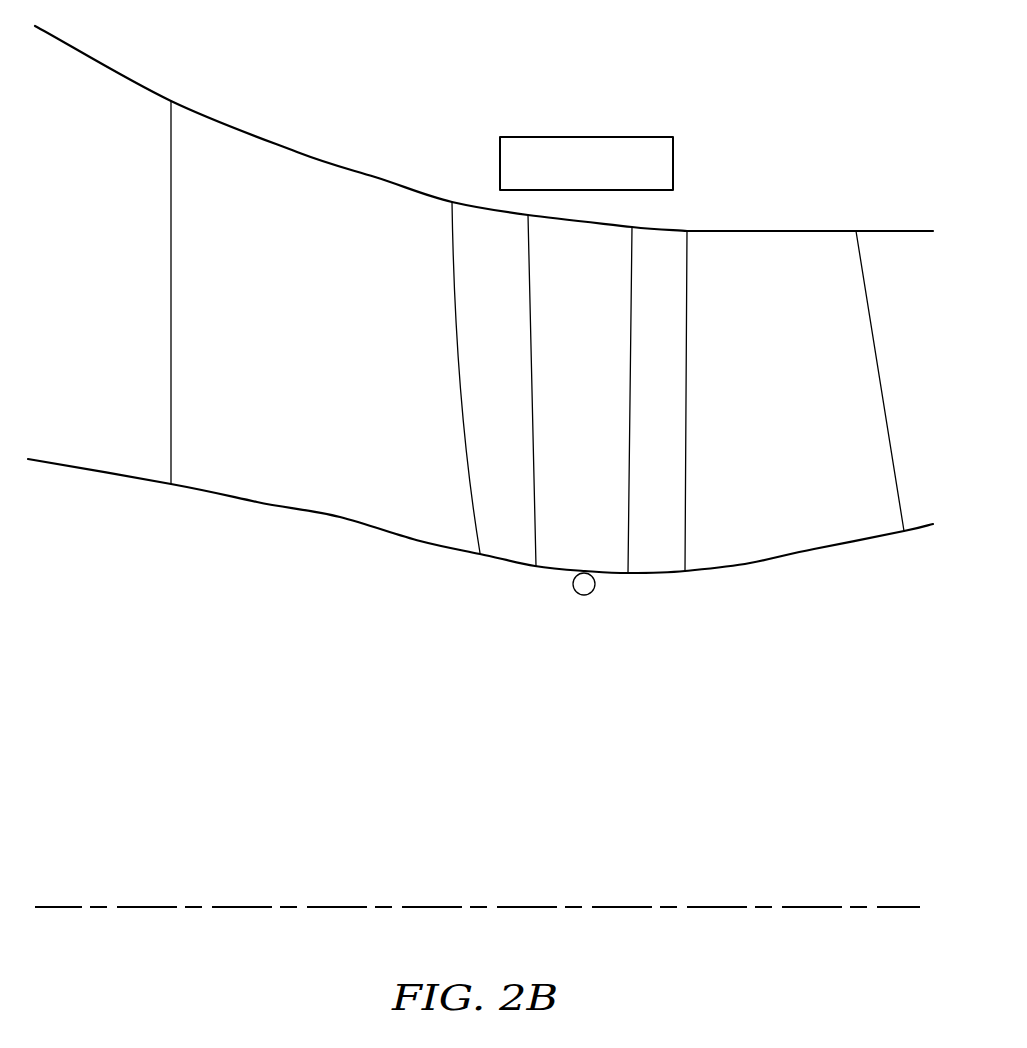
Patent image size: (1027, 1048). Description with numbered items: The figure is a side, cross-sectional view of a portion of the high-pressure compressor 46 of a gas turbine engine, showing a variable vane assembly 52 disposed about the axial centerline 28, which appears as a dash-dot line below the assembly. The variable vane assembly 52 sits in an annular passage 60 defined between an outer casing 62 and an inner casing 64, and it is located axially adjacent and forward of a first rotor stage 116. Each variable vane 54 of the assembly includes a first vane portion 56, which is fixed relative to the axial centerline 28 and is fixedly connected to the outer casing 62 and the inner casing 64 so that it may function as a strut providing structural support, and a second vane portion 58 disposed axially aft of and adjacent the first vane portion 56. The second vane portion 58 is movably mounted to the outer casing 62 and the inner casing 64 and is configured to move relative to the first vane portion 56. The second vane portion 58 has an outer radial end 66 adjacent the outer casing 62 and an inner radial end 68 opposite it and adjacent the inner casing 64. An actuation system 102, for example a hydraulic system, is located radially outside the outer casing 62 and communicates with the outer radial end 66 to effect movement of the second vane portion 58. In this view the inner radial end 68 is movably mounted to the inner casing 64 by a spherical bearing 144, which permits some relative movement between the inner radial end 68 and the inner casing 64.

The axial centerline 28 is at (905, 905).
The high-pressure compressor 46 is at (809, 82).
The variable vane assembly 52 is at (694, 193).
The variable vane 54 is at (432, 498).
The first vane portion 56 is at (483, 285).
The second vane portion 58 is at (589, 424).
The annular passage 60 is at (662, 429).
The outer casing 62 is at (297, 152).
The inner casing 64 is at (257, 502).
The outer radial end 66 is at (562, 219).
The inner radial end 68 is at (584, 572).
The actuation system 102 is at (567, 179).
The first rotor stage 116 is at (813, 521).
The spherical bearing 144 is at (594, 592).